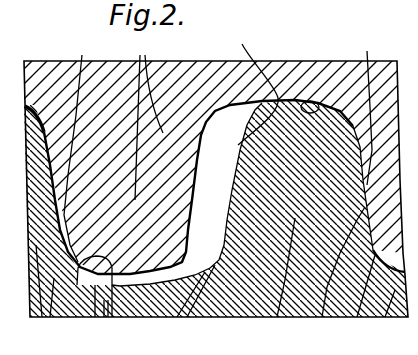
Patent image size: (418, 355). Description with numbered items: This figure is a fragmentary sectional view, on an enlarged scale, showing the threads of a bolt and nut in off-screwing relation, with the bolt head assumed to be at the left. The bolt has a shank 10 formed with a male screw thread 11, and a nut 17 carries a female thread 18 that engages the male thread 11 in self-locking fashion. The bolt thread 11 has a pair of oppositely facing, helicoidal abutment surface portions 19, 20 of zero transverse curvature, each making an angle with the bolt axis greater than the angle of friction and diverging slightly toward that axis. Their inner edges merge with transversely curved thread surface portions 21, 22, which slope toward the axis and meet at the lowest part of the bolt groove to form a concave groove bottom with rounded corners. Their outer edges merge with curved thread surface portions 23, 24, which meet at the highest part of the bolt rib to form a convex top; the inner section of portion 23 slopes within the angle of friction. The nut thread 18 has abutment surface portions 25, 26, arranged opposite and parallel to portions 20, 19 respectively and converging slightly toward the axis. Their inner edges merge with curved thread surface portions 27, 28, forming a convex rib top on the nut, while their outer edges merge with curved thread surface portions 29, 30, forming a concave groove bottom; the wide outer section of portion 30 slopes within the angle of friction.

The shank 10 is at (152, 308).
The male screw thread 11 is at (42, 317).
The nut 17 is at (57, 75).
The female thread 18 is at (398, 49).
The abutment surface portion 19 is at (232, 180).
The abutment surface portion 20 is at (78, 317).
The thread surface portion 21 is at (185, 317).
The thread surface portion 22 is at (93, 317).
The thread surface portion 23 is at (238, 145).
The thread surface portion 24 is at (311, 100).
The abutment surface portion 25 is at (221, 148).
The abutment surface portion 26 is at (192, 203).
The thread surface portion 27 is at (108, 317).
The thread surface portion 28 is at (187, 253).
The thread surface portion 29 is at (36, 100).
The thread surface portion 30 is at (205, 123).